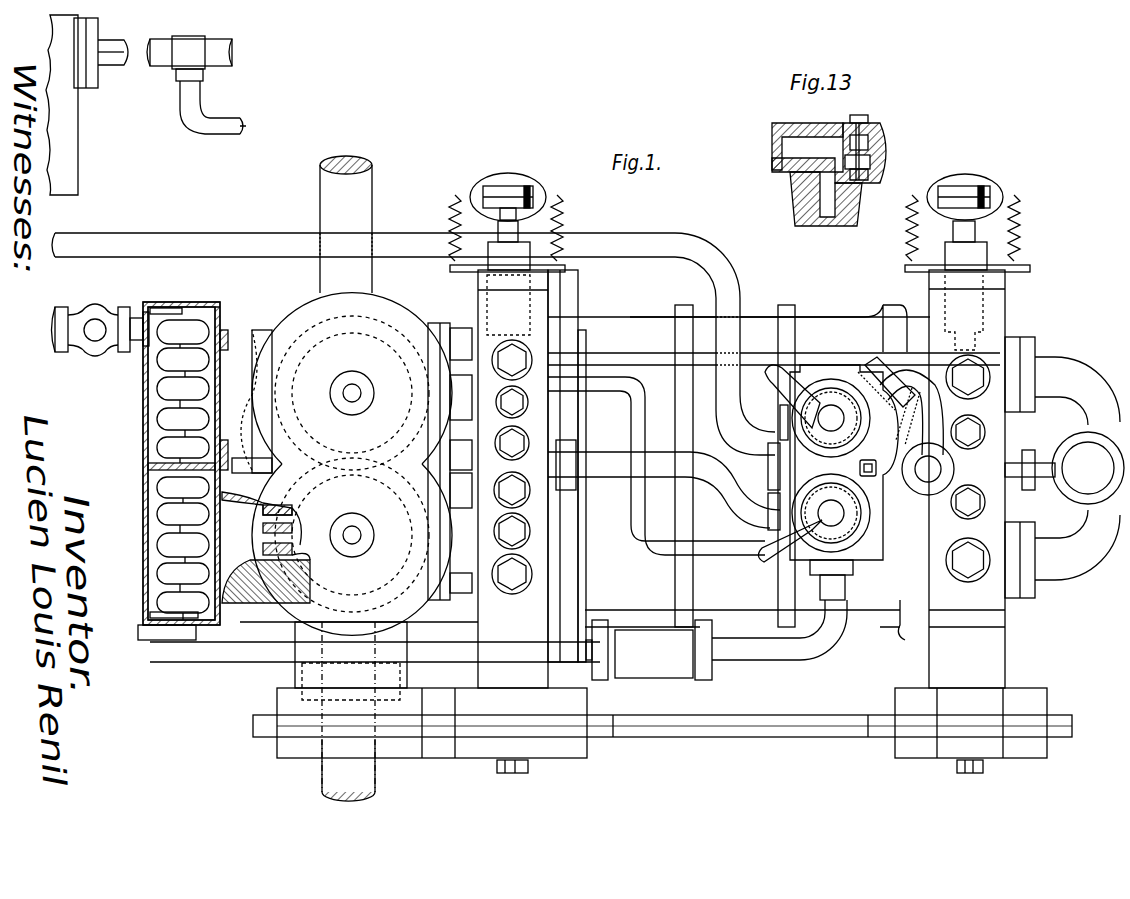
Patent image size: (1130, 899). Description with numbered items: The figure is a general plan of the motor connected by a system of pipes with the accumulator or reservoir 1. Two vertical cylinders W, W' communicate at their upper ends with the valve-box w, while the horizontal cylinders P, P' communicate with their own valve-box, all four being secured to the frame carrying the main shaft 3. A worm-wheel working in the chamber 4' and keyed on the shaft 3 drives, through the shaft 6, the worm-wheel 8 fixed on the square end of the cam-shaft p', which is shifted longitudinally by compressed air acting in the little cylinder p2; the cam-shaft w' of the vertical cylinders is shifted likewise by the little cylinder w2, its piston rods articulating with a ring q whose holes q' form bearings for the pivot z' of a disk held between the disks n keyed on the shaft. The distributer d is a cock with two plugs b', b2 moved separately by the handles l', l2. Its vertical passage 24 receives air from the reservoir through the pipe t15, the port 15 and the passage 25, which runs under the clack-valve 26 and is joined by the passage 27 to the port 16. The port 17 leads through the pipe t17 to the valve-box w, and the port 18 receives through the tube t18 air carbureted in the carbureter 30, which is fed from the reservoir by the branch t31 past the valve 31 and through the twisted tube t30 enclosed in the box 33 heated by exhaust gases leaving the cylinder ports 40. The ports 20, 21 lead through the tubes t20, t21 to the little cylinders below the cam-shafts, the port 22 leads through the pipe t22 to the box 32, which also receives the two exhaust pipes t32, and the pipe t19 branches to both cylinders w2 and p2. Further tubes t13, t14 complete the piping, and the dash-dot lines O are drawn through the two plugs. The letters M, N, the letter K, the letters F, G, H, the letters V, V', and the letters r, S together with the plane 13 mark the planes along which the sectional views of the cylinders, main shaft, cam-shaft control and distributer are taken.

In FIG. 1, the accumulator 1 is at (87, 105).
In FIG. 1, the main shaft 3 is at (350, 140).
In FIG. 1, the chamber 4' is at (422, 723).
In FIG. 1, the shaft 6 is at (748, 720).
In FIG. 1, the worm-wheel 8 is at (334, 766).
In FIG. 1, the section plane 13 is at (780, 410).
In FIG. 1, the port 15 is at (768, 448).
In FIG. 13, the port 15 is at (772, 140).
In FIG. 1, the port 16 is at (895, 395).
In FIG. 13, the port 16 is at (886, 152).
In FIG. 1, the port 17 is at (772, 504).
In FIG. 1, the port 18 is at (853, 570).
In FIG. 1, the port 20 is at (1017, 444).
In FIG. 1, the port 21 is at (890, 500).
In FIG. 1, the port 22 is at (840, 400).
In FIG. 13, the vertical passage 24 is at (790, 200).
In FIG. 13, the passage 25 is at (775, 158).
In FIG. 13, the clack-valve 26 is at (848, 130).
In FIG. 13, the passage 27 is at (870, 182).
In FIG. 1, the carbureter 30 is at (649, 650).
In FIG. 1, the valve 31 is at (96, 340).
In FIG. 1, the box 32 is at (1088, 468).
In FIG. 1, the box 33 is at (175, 471).
In FIG. 1, the ports 40 is at (264, 544).
In FIG. 1, the bar t13 is at (616, 365).
In FIG. 1, the pipe fitting t14 is at (576, 446).
In FIG. 1, the pipe t15 is at (147, 240).
In FIG. 1, the pipe t17 is at (652, 466).
In FIG. 1, the tube t18 is at (800, 655).
In FIG. 1, the pipe t19 is at (975, 432).
In FIG. 1, the tube t20 is at (892, 330).
In FIG. 1, the tube t21 is at (625, 430).
In FIG. 1, the pipe t22 is at (962, 412).
In FIG. 1, the spiral tube t30 is at (160, 410).
In FIG. 1, the branch t31 is at (203, 98).
In FIG. 1, the exhaust pipes t32 is at (1077, 468).
In FIG. 1, the vertical cylinder W is at (352, 381).
In FIG. 1, the vertical cylinder W' is at (352, 546).
In FIG. 1, the valve-box w is at (512, 478).
In FIG. 1, the cam-shaft w' is at (526, 767).
In FIG. 1, the little cylinder w2 is at (566, 268).
In FIG. 1, the ring q is at (522, 222).
In FIG. 1, the holes q' is at (505, 217).
In FIG. 1, the section line r is at (562, 212).
In FIG. 1, the disks n is at (508, 210).
In FIG. 1, the pivot z' is at (551, 170).
In FIG. 1, the cam-shaft p' is at (981, 770).
In FIG. 1, the little cylinder p2 is at (980, 258).
In FIG. 1, the horizontal cylinder P is at (789, 472).
In FIG. 1, the horizontal cylinder P' is at (862, 599).
In FIG. 1, the section line V is at (825, 291).
In FIG. 1, the section line V' is at (834, 674).
In FIG. 1, the section line F is at (513, 780).
In FIG. 1, the section line H is at (968, 780).
In FIG. 1, the section line K is at (349, 785).
In FIG. 1, the section line M is at (143, 567).
In FIG. 1, the section line N is at (1045, 565).
In FIG. 1, the section line S is at (902, 469).
In FIG. 1, the section line G is at (965, 180).
In FIG. 1, the axis O is at (760, 512).
In FIG. 1, the plug b' is at (831, 376).
In FIG. 1, the plug b2 is at (855, 520).
In FIG. 1, the handle l' is at (791, 396).
In FIG. 1, the handle l2 is at (787, 553).
In FIG. 1, the distributer d is at (765, 465).